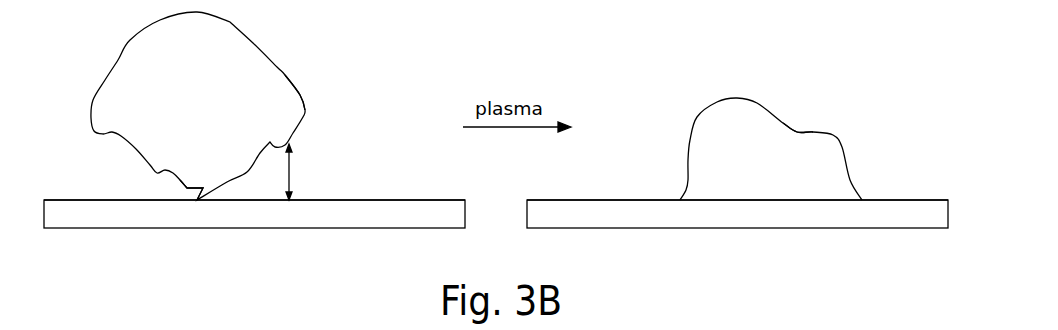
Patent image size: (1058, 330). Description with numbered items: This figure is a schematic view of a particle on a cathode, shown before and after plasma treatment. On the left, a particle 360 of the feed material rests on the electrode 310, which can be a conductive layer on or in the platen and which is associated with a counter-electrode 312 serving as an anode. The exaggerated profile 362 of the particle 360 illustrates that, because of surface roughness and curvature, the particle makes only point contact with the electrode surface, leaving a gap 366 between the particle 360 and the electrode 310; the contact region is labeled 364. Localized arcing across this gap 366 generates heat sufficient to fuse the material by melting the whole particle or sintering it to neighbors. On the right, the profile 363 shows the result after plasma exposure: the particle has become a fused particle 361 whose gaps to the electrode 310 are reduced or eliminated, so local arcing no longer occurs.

The electrode 310 is at (244, 223).
The counter-electrode 312 is at (502, 177).
The particle 360 is at (217, 124).
The fused particle 361 is at (789, 175).
The profile 362 is at (359, 92).
The profile 363 is at (857, 113).
The particle contact point 364 is at (126, 183).
The gap 366 is at (353, 160).